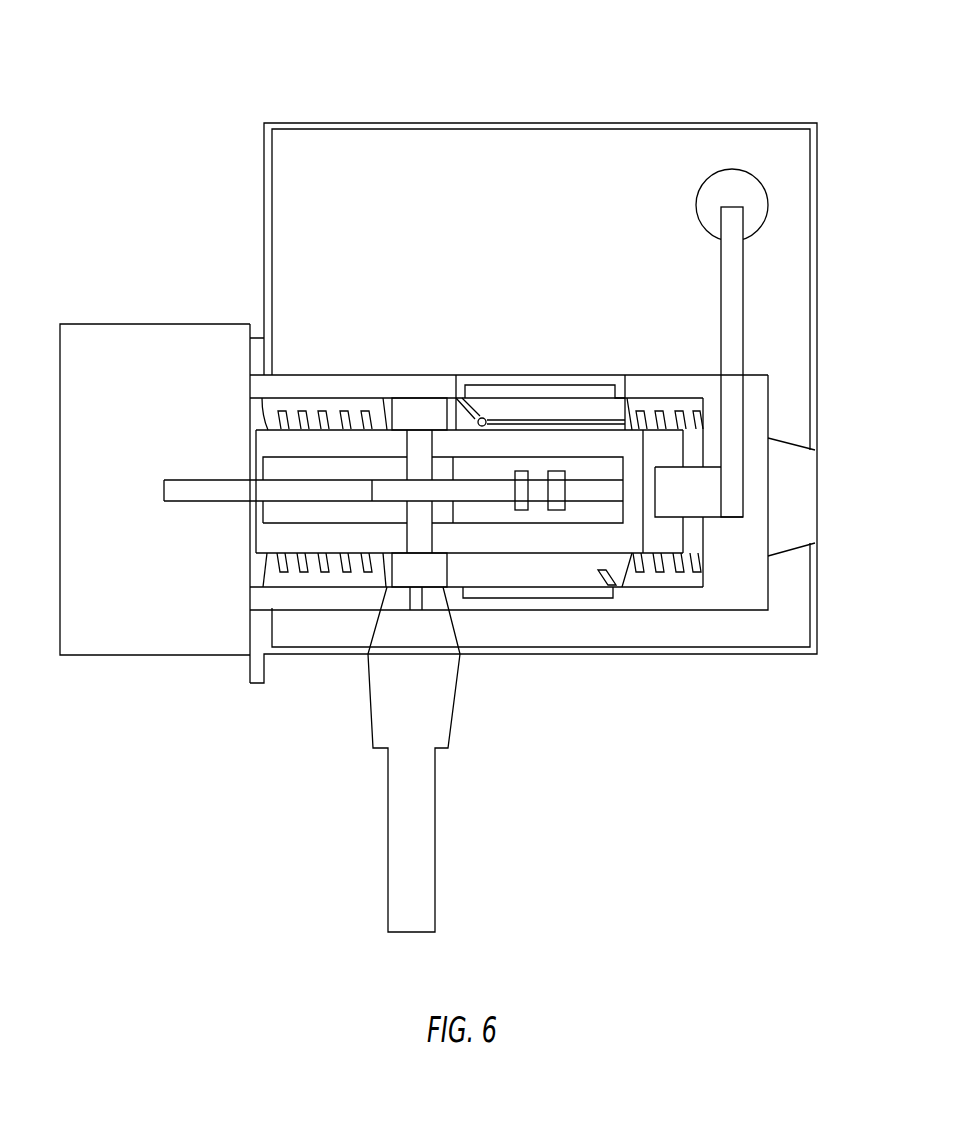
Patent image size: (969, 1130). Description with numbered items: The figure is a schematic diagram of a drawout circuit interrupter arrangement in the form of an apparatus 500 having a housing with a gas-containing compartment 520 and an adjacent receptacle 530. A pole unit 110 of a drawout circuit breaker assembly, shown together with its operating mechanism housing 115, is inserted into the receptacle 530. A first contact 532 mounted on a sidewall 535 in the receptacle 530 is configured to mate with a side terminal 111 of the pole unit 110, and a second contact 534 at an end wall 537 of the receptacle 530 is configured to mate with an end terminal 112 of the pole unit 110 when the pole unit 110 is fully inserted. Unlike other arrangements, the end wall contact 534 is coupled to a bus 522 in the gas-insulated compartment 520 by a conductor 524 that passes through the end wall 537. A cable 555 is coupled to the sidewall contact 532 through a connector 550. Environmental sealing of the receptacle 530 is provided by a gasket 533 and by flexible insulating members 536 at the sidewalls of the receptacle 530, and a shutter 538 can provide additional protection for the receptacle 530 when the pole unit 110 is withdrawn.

The apparatus 500 is at (763, 92).
The gas-containing compartment 520 is at (565, 140).
The bus 522 is at (700, 205).
The conductor 524 is at (722, 308).
The gasket 533 is at (257, 345).
The sidewall 535 is at (317, 381).
The end wall 537 is at (713, 427).
The first contact 532 is at (421, 402).
The shutter 538 is at (593, 420).
The pole unit 110 is at (330, 537).
The side terminal 111 is at (424, 540).
The end terminal 112 is at (668, 538).
The second contact 534 is at (708, 500).
The receptacle 530 is at (578, 582).
The flexible insulating members 536 is at (630, 567).
The connector 550 is at (440, 630).
The cable 555 is at (435, 838).
The operating mechanism housing 115 is at (148, 661).